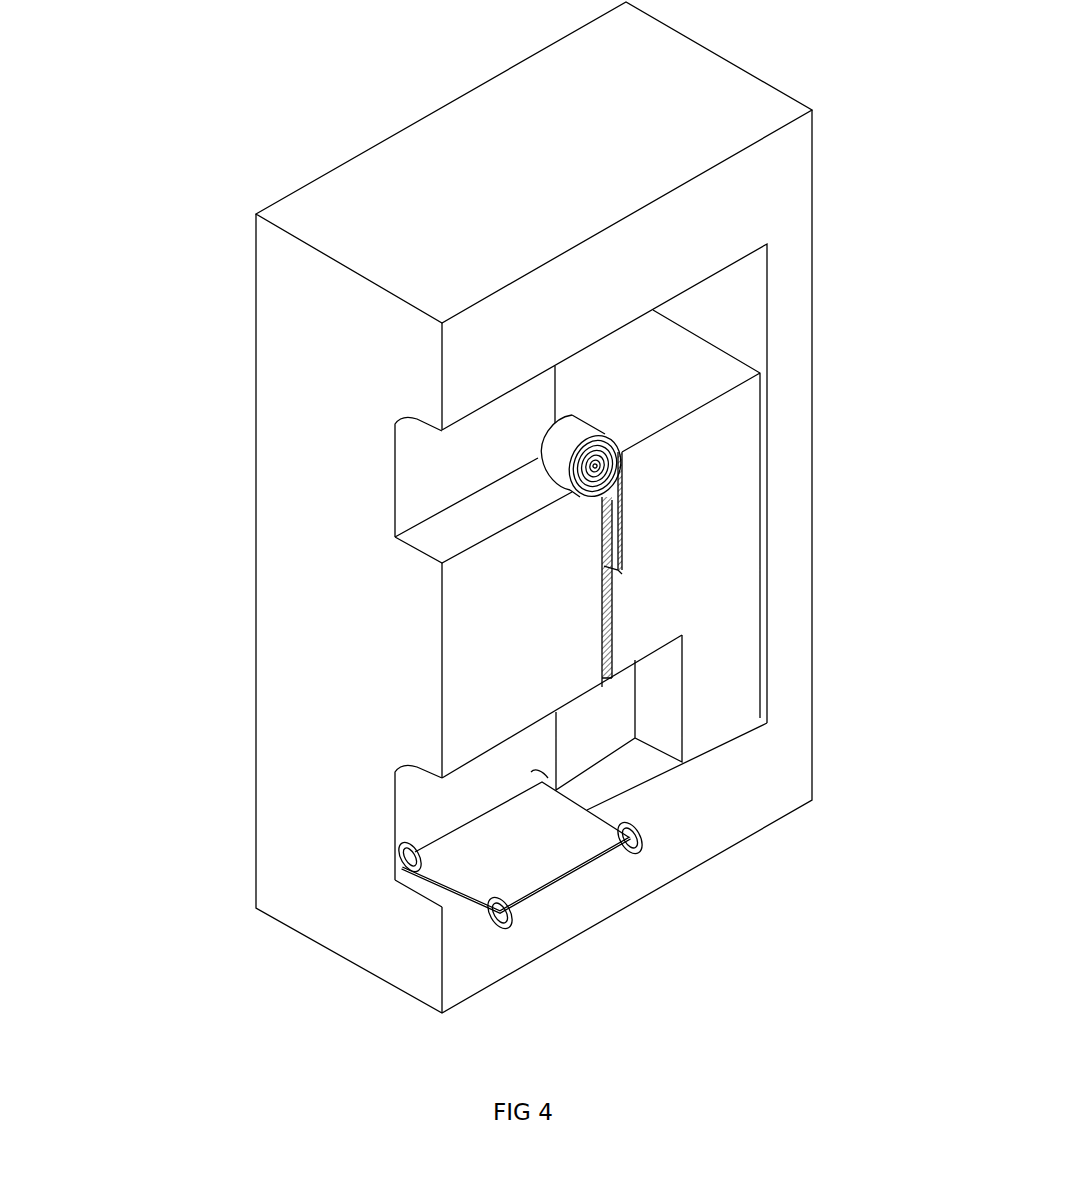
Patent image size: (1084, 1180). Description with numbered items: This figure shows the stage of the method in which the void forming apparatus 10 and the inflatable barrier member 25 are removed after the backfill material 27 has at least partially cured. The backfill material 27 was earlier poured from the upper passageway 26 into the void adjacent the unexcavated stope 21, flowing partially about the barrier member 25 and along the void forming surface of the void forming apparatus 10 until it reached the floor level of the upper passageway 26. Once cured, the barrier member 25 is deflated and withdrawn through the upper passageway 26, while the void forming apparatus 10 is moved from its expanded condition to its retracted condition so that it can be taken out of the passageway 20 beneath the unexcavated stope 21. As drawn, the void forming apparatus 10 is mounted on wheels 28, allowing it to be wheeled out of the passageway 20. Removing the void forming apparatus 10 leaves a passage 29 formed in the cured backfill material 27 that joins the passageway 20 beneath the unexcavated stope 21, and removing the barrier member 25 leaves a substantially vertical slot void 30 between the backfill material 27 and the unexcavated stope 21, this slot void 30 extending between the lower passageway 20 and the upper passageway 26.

The void forming apparatus 10 is at (548, 863).
The passageway 20 is at (415, 797).
The unexcavated stope 21 is at (470, 612).
The inflatable barrier member 25 is at (556, 432).
The upper passageway 26 is at (422, 452).
The backfill material 27 is at (720, 487).
The wheels 28 is at (485, 922).
The passage 29 is at (588, 706).
The slot void 30 is at (612, 625).